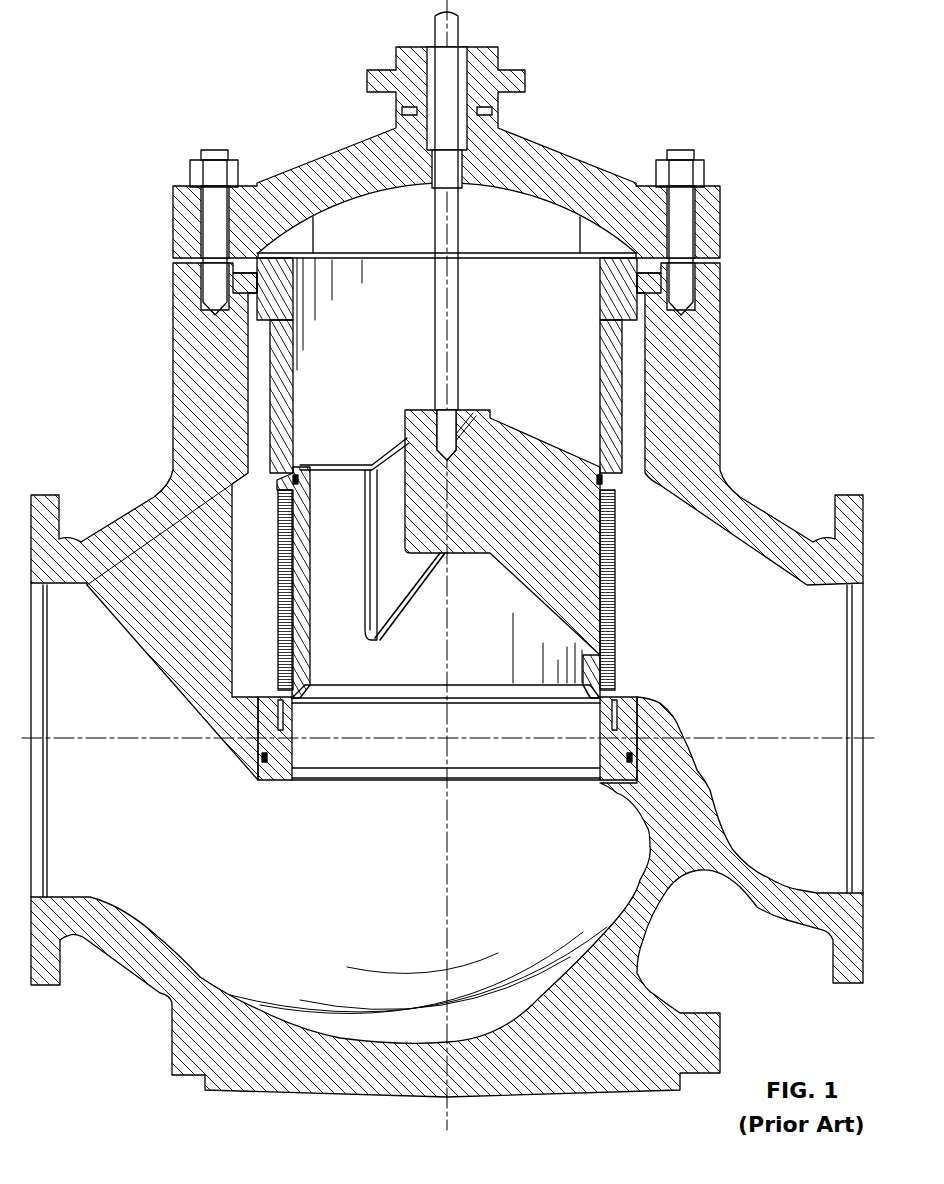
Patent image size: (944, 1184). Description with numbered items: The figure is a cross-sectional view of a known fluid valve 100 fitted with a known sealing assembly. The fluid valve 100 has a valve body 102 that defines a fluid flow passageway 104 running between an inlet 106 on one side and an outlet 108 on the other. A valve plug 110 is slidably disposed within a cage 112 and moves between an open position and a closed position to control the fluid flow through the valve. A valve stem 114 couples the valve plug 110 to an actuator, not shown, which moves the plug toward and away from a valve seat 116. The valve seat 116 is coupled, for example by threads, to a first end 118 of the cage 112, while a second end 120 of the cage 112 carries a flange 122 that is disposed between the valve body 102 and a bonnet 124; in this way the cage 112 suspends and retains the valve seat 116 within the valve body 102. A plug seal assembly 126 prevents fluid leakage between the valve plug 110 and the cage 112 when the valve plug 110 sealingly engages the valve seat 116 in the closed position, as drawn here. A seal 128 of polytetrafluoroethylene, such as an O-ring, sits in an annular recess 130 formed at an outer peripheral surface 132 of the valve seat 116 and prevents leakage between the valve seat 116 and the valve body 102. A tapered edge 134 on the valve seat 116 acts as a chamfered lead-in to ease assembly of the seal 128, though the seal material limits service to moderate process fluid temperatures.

The fluid valve 100 is at (700, 80).
The valve body 102 is at (650, 938).
The fluid flow passageway 104 is at (292, 925).
The inlet 106 is at (26, 690).
The outlet 108 is at (866, 688).
The valve plug 110 is at (562, 472).
The cage 112 is at (612, 360).
The valve stem 114 is at (470, 20).
The valve seat 116 is at (600, 770).
The first end of the cage 118 is at (278, 707).
The second end of the cage 120 is at (600, 272).
The flange 122 is at (645, 283).
The bonnet 124 is at (560, 155).
The plug seal assembly 126 is at (296, 480).
The seal 128 is at (265, 758).
The annular recess 130 is at (300, 782).
The outer peripheral surface 132 is at (633, 745).
The tapered edge 134 is at (630, 765).